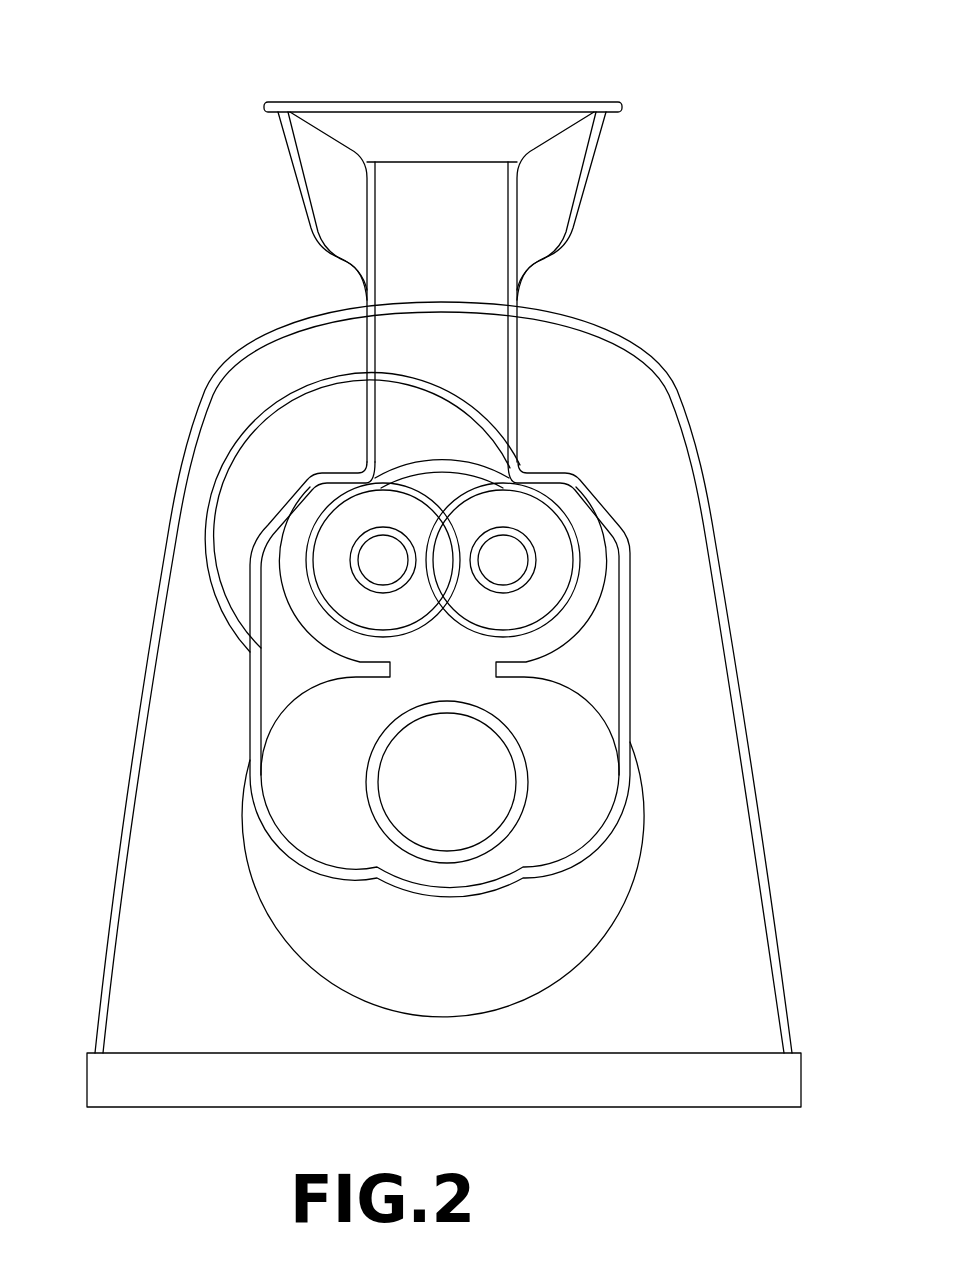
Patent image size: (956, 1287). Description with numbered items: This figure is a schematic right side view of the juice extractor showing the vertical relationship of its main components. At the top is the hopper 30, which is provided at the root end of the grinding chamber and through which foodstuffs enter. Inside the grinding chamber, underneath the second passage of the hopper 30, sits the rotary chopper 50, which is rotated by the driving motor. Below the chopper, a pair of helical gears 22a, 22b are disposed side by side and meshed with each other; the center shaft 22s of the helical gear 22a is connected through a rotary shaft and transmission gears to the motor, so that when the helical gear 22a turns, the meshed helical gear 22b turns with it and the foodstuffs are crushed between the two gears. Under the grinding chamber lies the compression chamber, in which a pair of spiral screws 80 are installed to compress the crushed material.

The hopper 30 is at (472, 123).
The rotary chopper 50 is at (323, 378).
The helical gear 22a is at (348, 513).
The helical gear 22b is at (547, 533).
The center shaft 22s is at (373, 563).
The spiral screws 80 is at (407, 783).